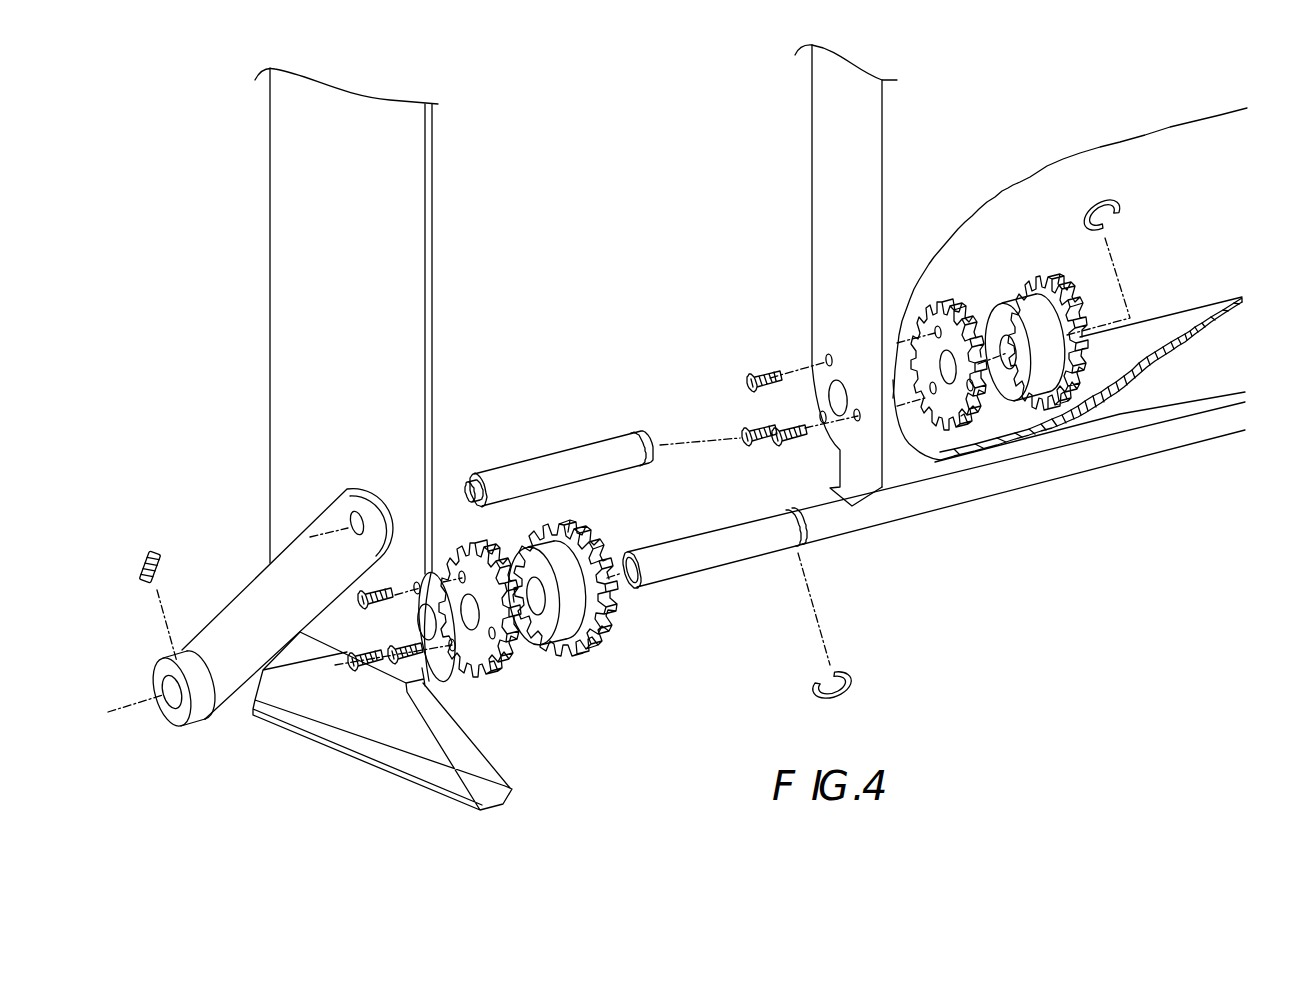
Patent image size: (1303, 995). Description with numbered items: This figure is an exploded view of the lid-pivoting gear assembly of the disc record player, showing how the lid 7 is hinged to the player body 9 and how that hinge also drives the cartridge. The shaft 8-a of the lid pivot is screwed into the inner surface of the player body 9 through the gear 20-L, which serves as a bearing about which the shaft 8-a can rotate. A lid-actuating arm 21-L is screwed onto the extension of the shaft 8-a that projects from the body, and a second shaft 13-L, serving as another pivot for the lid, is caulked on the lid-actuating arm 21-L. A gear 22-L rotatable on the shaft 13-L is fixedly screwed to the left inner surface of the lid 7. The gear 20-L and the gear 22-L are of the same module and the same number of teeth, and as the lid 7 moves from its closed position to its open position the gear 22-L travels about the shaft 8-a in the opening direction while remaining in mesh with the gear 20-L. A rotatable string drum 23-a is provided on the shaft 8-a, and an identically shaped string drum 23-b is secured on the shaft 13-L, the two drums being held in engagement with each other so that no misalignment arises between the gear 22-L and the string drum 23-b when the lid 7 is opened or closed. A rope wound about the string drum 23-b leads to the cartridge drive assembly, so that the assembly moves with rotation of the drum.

The player body 9 is at (267, 243).
The lid 7 is at (813, 102).
The shaft 13-L is at (580, 445).
The lid-actuating arm 21-L is at (243, 590).
The gear 20-L is at (508, 667).
The string drum 23-a is at (598, 643).
The shaft 8-a is at (877, 527).
The gear 22-L is at (970, 403).
The string drum 23-b is at (1080, 400).